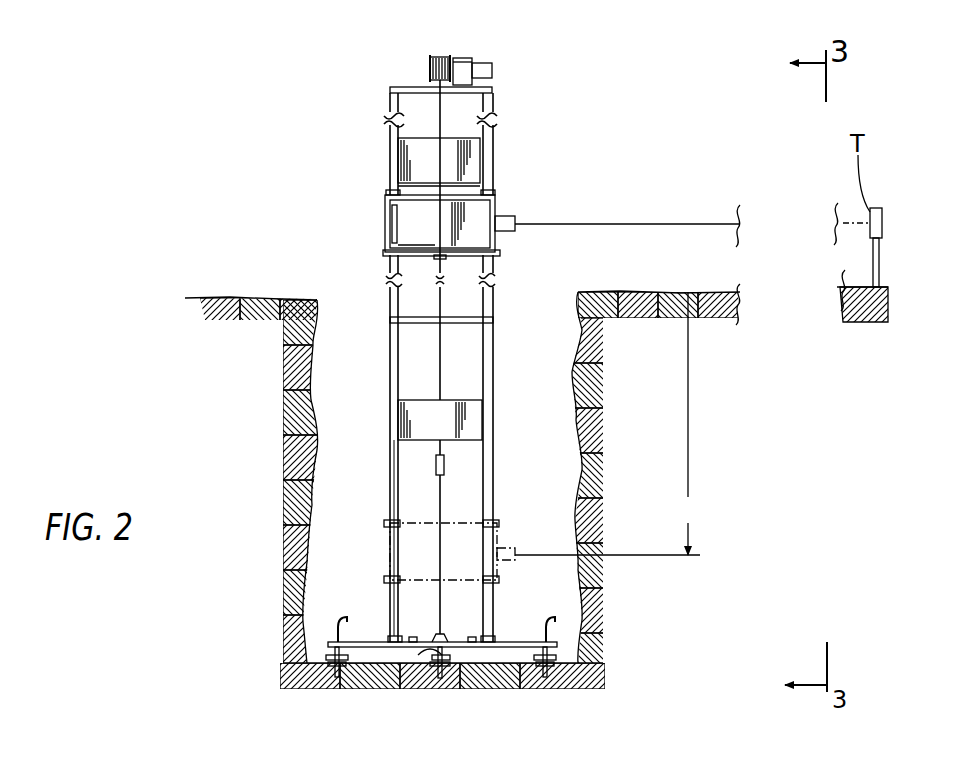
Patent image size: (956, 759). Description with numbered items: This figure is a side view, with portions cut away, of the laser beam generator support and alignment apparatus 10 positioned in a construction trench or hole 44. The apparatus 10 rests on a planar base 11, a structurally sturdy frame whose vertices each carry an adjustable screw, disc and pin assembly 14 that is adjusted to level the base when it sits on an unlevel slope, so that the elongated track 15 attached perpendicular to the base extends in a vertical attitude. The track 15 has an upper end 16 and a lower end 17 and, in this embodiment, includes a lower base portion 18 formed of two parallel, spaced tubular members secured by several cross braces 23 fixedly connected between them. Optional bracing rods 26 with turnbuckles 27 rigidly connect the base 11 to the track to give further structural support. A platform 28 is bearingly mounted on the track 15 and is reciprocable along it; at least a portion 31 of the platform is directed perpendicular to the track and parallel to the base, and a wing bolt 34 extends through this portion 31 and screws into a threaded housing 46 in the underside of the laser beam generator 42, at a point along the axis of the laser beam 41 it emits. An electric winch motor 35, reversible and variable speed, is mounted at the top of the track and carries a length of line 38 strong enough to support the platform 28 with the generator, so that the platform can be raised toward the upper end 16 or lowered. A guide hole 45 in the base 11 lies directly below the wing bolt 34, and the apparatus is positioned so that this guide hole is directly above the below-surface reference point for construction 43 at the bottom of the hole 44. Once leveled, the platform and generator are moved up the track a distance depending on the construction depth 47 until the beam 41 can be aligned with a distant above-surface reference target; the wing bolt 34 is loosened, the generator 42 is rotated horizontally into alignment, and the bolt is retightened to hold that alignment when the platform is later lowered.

The laser beam generator support and alignment apparatus 10 is at (289, 165).
The planar base 11 is at (510, 644).
The adjustable screw, disc and pin assembly 14 is at (329, 627).
The elongated track 15 is at (499, 165).
The upper end 16 is at (388, 103).
The lower end 17 is at (392, 610).
The lower base portion 18 is at (388, 428).
The cross braces 23 is at (413, 165).
The bracing rods 26 is at (443, 500).
The turnbuckles 27 is at (447, 465).
The platform 28 is at (497, 198).
The portion of platform 31 is at (413, 255).
The wing bolt 34 is at (435, 260).
The electric winch motor 35 is at (463, 68).
The line 38 is at (437, 115).
The laser beam 41 is at (608, 224).
The laser beam generator 42 is at (412, 217).
The below-surface reference point for construction 43 is at (418, 655).
The construction trench or hole 44 is at (536, 324).
The guide hole 45 is at (441, 636).
The threaded housing 46 is at (440, 243).
The construction depth 47 is at (607, 423).